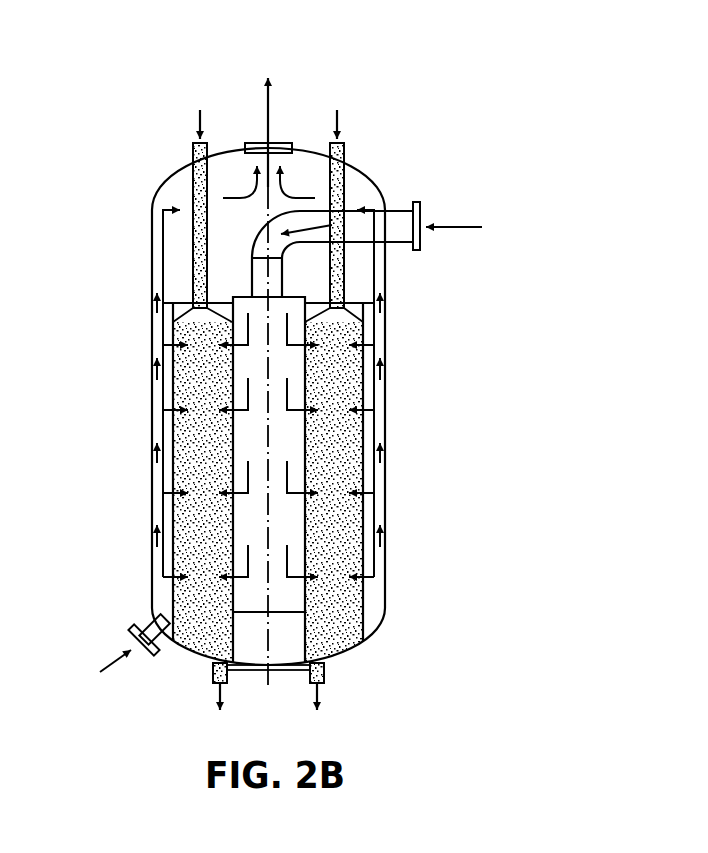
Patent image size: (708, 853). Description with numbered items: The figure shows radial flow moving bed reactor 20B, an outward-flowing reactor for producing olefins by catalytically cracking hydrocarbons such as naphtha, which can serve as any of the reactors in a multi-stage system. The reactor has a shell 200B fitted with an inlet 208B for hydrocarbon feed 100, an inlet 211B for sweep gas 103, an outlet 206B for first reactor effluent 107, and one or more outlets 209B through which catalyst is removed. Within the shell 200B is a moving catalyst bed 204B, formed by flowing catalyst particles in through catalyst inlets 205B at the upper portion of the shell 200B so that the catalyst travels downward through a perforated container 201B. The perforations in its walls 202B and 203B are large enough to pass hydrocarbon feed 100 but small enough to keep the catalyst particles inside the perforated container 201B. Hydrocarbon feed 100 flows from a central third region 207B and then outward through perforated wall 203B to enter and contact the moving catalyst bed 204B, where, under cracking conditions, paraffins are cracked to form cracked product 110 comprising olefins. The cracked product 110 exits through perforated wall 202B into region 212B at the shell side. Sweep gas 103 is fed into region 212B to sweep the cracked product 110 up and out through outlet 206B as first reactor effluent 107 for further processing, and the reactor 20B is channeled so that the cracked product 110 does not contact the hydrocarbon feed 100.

The radial flow moving bed reactor 20B is at (401, 21).
The first reactor effluent 107 is at (268, 54).
The hydrocarbon feed 100 is at (481, 227).
The sweep gas 103 is at (75, 695).
The cracked product 110 is at (162, 466).
The shell 200B is at (180, 176).
The perforated container 201B is at (162, 280).
The perforated wall 202B is at (172, 350).
The perforated wall 203B is at (208, 362).
The moving catalyst bed 204B is at (174, 506).
The catalyst inlets 205B is at (192, 148).
The outlet 206B is at (283, 143).
The third region 207B is at (283, 598).
The inlet 208B is at (398, 210).
The outlets 209B is at (213, 678).
The inlet 211B is at (133, 633).
The region 212B is at (165, 425).